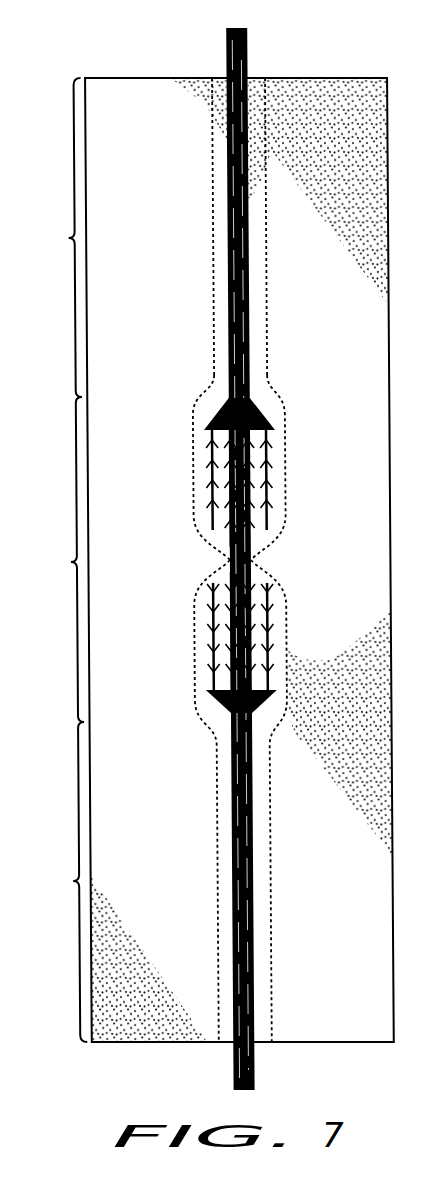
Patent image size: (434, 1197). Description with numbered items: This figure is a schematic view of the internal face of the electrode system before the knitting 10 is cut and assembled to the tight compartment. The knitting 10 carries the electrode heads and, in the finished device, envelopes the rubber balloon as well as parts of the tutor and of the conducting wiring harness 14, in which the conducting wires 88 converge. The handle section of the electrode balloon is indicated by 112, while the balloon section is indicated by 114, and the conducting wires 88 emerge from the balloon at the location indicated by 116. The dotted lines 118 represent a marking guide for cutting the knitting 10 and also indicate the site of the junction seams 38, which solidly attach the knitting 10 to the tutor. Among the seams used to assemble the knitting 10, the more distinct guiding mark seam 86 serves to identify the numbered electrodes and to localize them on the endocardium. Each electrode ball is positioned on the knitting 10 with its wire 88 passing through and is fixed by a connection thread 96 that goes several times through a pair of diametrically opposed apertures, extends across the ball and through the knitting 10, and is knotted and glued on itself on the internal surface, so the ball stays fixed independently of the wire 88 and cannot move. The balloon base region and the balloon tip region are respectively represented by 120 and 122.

The knitting 10 is at (138, 92).
The conducting wiring harness 14 is at (226, 228).
The junction seams 38 is at (190, 462).
The guiding mark seam 86 is at (282, 437).
The conducting wires 88 is at (281, 631).
The connection thread 96 is at (266, 616).
The handle section 112 is at (60, 560).
The balloon section 114 is at (58, 559).
The emergence of the wires 116 is at (247, 397).
The dotted lines 118 is at (265, 310).
The balloon base region 120 is at (207, 722).
The balloon tip region 122 is at (252, 559).